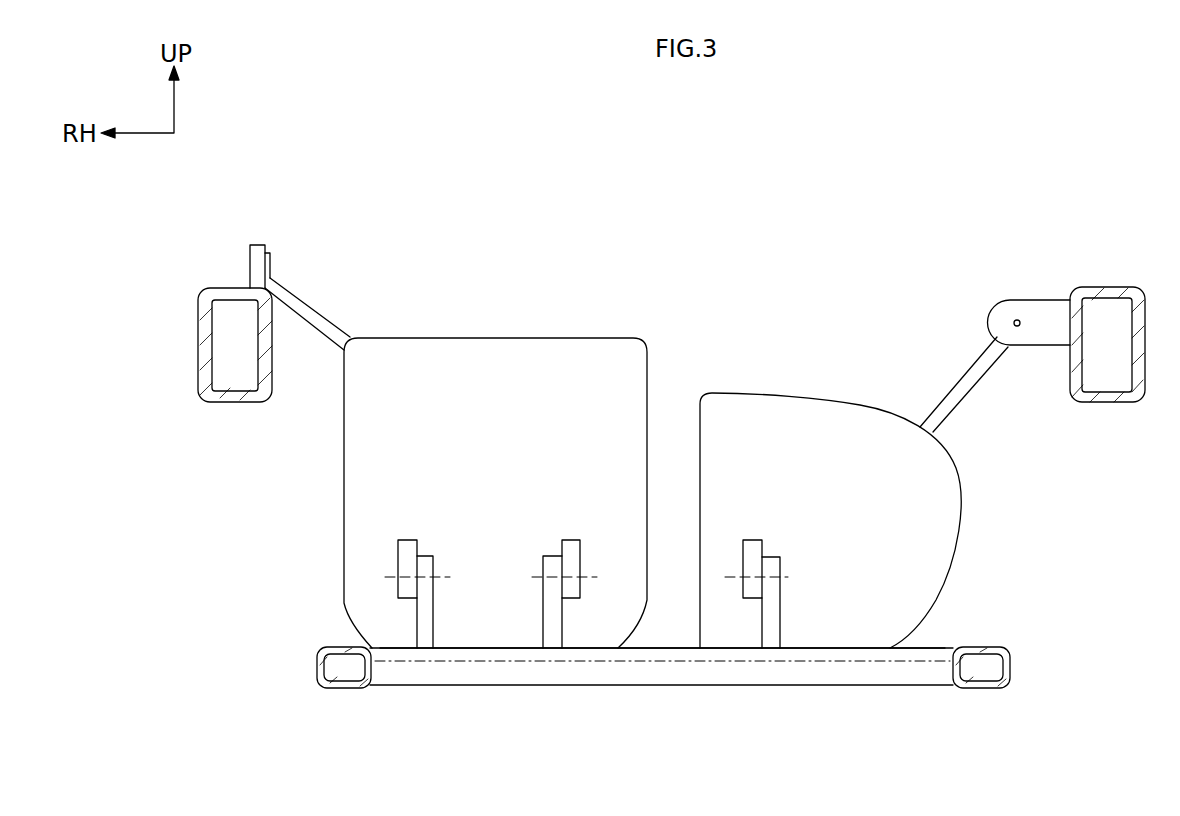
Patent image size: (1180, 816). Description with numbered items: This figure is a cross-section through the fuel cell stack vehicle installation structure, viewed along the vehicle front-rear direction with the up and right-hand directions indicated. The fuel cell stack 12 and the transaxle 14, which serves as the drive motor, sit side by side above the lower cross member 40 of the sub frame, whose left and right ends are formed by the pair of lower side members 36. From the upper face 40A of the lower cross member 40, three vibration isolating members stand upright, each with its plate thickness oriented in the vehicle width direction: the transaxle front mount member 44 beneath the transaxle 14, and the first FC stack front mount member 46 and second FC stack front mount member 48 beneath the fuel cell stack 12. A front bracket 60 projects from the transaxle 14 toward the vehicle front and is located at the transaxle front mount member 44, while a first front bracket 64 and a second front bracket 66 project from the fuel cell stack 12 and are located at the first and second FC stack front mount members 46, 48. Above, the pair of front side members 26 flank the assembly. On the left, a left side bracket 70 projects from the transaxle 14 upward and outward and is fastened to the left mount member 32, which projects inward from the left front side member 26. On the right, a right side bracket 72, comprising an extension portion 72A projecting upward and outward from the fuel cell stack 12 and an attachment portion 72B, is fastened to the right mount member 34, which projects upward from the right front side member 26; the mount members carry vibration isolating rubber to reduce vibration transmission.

The fuel cell stack 12 is at (533, 337).
The transaxle 14 is at (793, 393).
The front side member 26 is at (218, 288).
The left mount member 32 is at (1038, 300).
The right mount member 34 is at (250, 258).
The lower side member 36 is at (327, 688).
The lower cross member 40 is at (903, 688).
The upper face of the lower cross member 40A is at (928, 649).
The transaxle front mount member 44 is at (780, 615).
The first FC stack front mount member 46 is at (545, 627).
The second FC stack front mount member 48 is at (433, 615).
The front bracket 60 is at (745, 560).
The first front bracket 64 is at (580, 557).
The second front bracket 66 is at (400, 557).
The left side bracket 70 is at (972, 388).
The right side bracket 72 is at (355, 256).
The extension portion 72A is at (314, 300).
The attachment portion 72B is at (272, 264).